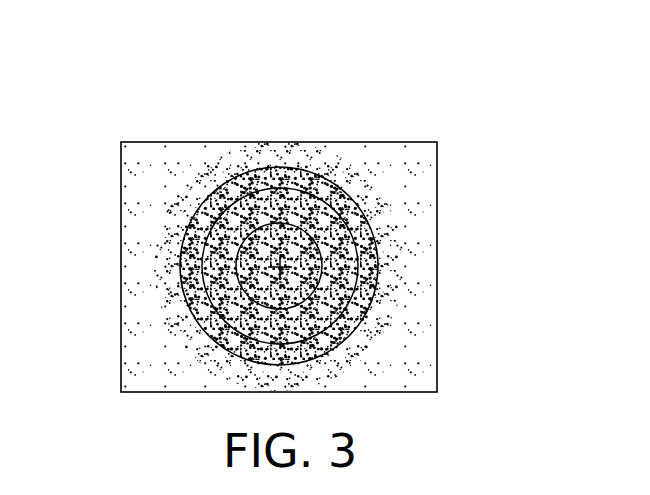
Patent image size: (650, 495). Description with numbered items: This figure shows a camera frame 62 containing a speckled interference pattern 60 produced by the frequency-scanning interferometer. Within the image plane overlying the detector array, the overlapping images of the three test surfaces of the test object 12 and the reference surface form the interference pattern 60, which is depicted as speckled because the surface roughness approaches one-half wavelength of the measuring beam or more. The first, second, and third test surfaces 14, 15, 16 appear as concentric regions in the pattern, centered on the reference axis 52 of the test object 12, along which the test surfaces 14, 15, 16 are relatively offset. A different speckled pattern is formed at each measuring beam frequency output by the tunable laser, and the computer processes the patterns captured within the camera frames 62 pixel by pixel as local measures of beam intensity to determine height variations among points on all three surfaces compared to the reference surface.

The test object 12 is at (251, 270).
The first test surface 14 is at (246, 233).
The second test surface 15 is at (290, 300).
The third test surface 16 is at (307, 354).
The reference axis 52 is at (284, 264).
The interference pattern 60 is at (260, 169).
The camera frame 62 is at (121, 192).